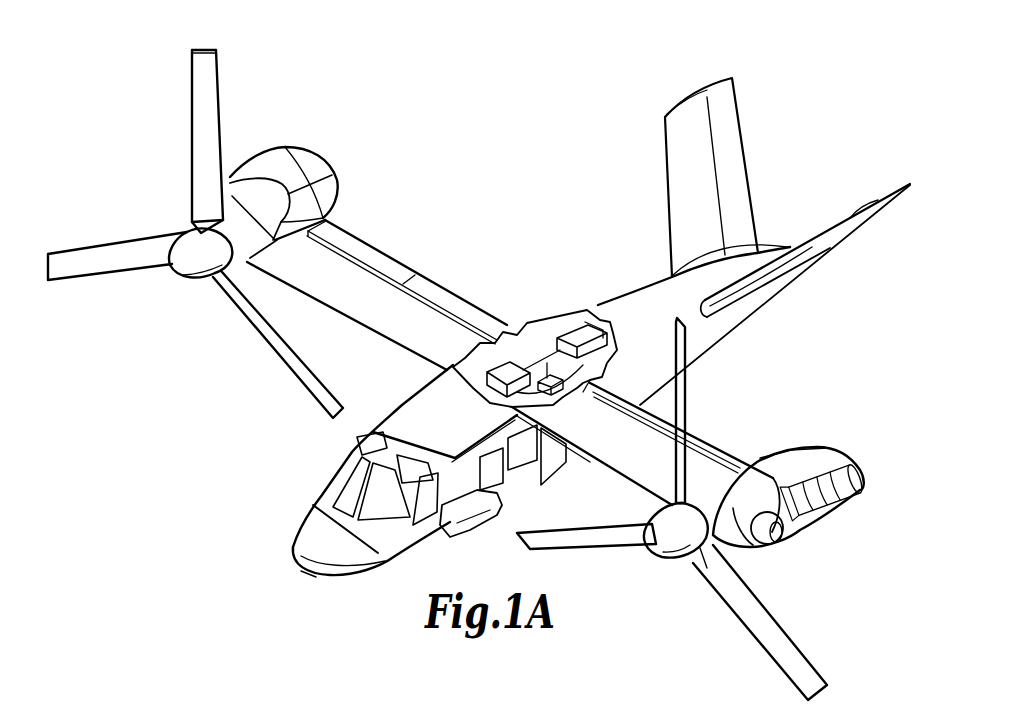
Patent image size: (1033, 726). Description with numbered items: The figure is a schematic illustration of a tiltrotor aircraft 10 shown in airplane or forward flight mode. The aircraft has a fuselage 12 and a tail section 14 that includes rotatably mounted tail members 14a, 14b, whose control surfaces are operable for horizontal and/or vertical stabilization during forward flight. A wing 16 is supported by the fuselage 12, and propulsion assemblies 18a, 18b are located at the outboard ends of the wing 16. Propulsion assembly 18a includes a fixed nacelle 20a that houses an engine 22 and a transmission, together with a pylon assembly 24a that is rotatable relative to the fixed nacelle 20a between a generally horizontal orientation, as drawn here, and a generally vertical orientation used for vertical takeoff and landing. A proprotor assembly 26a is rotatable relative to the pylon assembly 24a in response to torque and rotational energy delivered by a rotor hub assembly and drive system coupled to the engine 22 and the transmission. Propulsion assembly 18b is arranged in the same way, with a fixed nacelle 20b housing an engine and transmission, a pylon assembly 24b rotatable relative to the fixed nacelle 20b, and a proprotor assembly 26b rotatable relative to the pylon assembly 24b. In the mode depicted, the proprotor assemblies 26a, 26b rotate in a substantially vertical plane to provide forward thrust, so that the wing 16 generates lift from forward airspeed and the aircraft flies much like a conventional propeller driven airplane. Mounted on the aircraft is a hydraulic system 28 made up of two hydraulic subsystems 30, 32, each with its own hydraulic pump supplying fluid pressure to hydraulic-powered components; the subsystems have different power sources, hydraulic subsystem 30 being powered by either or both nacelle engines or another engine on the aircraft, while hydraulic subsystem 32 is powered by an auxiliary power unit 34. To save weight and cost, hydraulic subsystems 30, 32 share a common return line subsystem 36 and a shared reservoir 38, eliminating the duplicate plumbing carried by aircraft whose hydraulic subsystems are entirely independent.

The tiltrotor aircraft 10 is at (529, 91).
The fuselage 12 is at (633, 302).
The tail section 14 is at (787, 163).
The tail member 14a is at (884, 197).
The tail member 14b is at (691, 96).
The wing 16 is at (382, 291).
The propulsion assembly 18a is at (817, 455).
The propulsion assembly 18b is at (324, 148).
The fixed nacelle 20a is at (808, 451).
The fixed nacelle 20b is at (324, 160).
The engine 22 is at (843, 497).
The pylon assembly 24a is at (703, 492).
The pylon assembly 24b is at (242, 208).
The proprotor assembly 26a is at (780, 635).
The proprotor assembly 26b is at (206, 74).
The hydraulic system 28 is at (535, 368).
The hydraulic subsystem 30 is at (503, 363).
The hydraulic subsystem 32 is at (577, 337).
The auxiliary power unit 34 is at (602, 322).
The shared return line subsystem 36 is at (587, 382).
The shared reservoir 38 is at (562, 390).